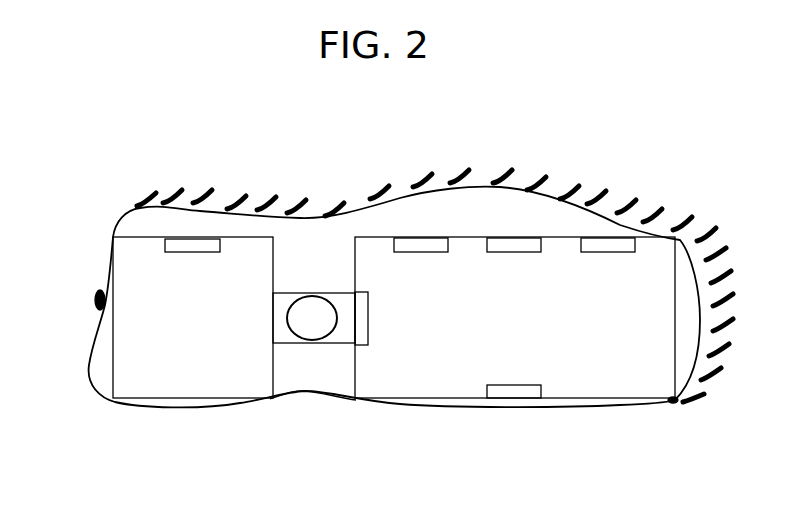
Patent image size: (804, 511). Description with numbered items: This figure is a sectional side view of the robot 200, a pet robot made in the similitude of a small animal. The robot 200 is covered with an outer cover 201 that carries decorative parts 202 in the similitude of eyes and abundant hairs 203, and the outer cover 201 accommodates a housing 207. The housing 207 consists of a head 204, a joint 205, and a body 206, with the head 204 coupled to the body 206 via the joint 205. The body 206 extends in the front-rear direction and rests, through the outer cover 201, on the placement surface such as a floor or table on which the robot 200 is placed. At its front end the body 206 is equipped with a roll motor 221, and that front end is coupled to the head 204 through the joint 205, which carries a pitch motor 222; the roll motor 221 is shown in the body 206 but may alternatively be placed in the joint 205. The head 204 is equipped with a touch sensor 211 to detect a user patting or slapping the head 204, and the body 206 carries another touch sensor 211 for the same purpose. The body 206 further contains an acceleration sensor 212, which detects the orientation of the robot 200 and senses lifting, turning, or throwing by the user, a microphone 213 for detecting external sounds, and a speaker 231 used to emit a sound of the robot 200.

The robot 200 is at (644, 163).
The outer cover 201 is at (302, 396).
The decorative parts 202 is at (95, 300).
The hairs 203 is at (140, 207).
The head 204 is at (183, 400).
The joint 205 is at (336, 350).
The body 206 is at (606, 400).
The housing 207 is at (447, 218).
The touch sensor 211 is at (196, 252).
The acceleration sensor 212 is at (518, 385).
The microphone 213 is at (602, 252).
The roll motor 221 is at (368, 335).
The pitch motor 222 is at (291, 300).
The speaker 231 is at (428, 252).